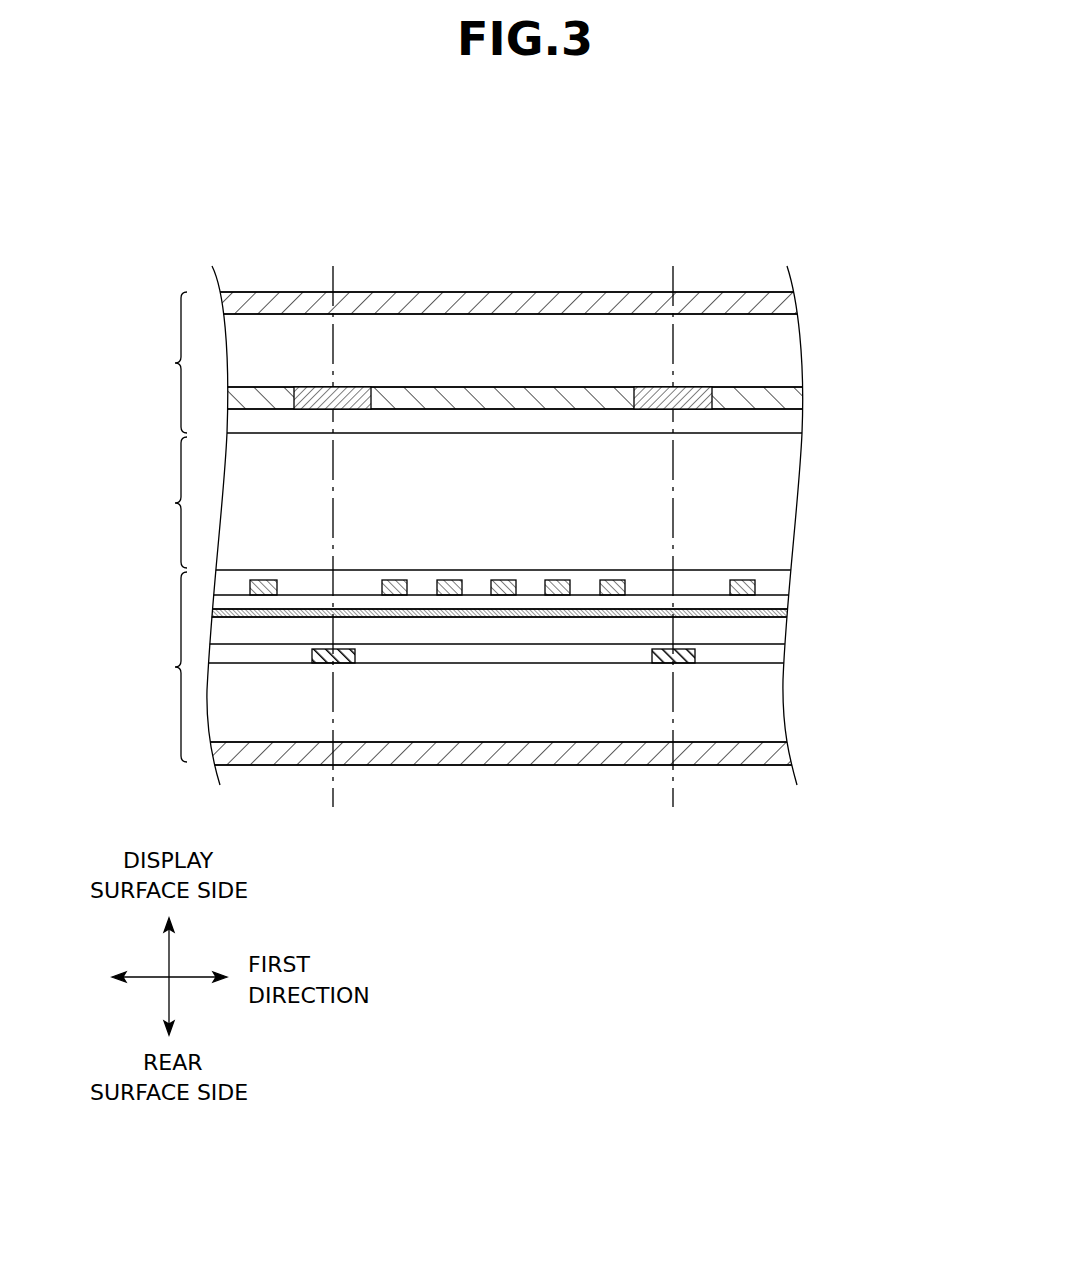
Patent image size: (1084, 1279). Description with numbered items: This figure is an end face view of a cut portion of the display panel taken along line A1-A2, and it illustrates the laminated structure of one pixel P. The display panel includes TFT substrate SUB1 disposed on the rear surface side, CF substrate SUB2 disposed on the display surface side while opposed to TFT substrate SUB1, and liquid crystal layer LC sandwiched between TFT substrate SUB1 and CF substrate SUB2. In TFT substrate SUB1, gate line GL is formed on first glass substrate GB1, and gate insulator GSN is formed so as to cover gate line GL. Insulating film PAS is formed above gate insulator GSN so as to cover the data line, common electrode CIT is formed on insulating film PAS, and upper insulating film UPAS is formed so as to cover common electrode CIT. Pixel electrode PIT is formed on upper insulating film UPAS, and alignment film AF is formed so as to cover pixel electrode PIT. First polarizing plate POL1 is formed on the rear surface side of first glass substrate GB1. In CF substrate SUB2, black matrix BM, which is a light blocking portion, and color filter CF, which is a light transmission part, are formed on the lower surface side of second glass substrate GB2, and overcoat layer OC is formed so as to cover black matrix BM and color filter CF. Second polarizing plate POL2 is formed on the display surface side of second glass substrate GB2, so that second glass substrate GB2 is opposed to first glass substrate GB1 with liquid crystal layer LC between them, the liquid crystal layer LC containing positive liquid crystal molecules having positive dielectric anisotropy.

The second polarizing plate POL2 is at (772, 305).
The second glass substrate GB2 is at (770, 350).
The color filter CF is at (257, 400).
The black matrix BM is at (353, 399).
The overcoat layer OC is at (772, 420).
The color filter substrate SUB2 is at (136, 362).
The liquid crystal layer LC is at (155, 502).
The thin film transistor substrate SUB1 is at (136, 667).
The alignment film AF is at (785, 582).
The upper insulating film UPAS is at (785, 602).
The pixel electrode PIT is at (605, 580).
The common electrode CIT is at (785, 613).
The insulating film PAS is at (780, 629).
The gate insulator GSN is at (780, 652).
The gate line GL is at (348, 664).
The first glass substrate GB1 is at (770, 713).
The first polarizing plate POL1 is at (770, 750).
The pixel P is at (673, 242).
The line A1-A2 end point A1 is at (203, 500).
The line A1-A2 end point A2 is at (804, 501).